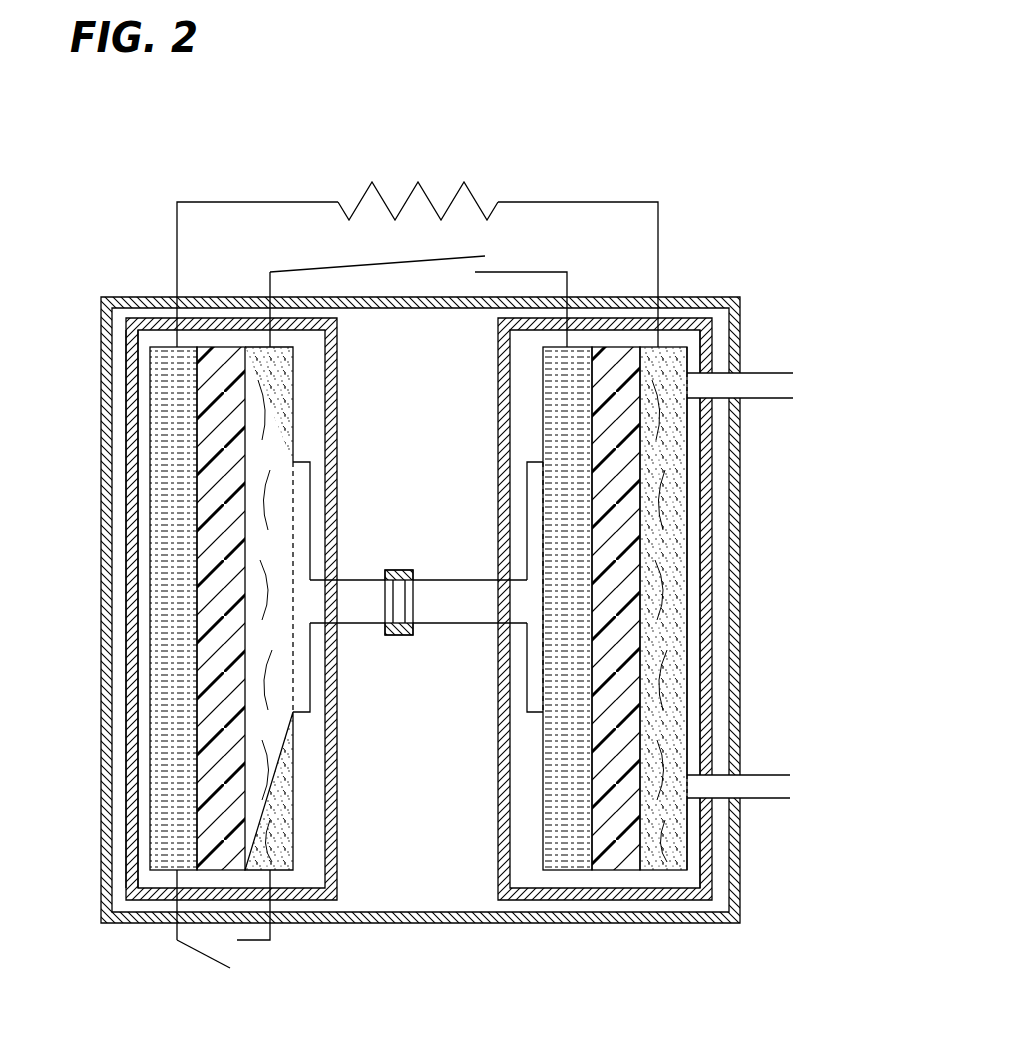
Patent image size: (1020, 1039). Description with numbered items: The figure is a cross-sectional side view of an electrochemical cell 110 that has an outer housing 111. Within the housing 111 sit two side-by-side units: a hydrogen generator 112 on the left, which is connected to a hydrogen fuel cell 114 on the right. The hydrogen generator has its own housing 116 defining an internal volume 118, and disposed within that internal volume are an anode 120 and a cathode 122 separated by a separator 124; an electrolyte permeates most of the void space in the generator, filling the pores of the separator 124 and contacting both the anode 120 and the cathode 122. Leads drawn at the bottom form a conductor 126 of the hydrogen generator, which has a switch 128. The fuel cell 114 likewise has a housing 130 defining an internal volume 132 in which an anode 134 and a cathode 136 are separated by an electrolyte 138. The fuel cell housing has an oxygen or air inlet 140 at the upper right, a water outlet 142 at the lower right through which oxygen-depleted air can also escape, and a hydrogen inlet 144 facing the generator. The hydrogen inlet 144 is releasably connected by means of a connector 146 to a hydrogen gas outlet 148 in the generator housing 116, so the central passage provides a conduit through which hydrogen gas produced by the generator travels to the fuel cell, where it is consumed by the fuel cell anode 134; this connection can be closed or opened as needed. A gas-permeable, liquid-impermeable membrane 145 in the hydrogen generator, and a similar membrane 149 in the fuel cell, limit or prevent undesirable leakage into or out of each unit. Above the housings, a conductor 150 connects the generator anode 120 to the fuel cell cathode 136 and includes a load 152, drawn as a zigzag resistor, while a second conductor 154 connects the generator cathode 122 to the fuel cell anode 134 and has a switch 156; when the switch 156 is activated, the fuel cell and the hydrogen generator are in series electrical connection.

The electrochemical cell 110 is at (178, 175).
The housing 111 is at (148, 297).
The hydrogen generator 112 is at (132, 318).
The hydrogen fuel cell 114 is at (700, 297).
The housing 116 is at (124, 432).
The internal volume 118 is at (136, 513).
The anode 120 is at (152, 648).
The cathode 122 is at (270, 777).
The separator 124 is at (208, 812).
The conductor 126 is at (210, 960).
The switch 128 is at (232, 948).
The housing 130 is at (703, 567).
The internal volume 132 is at (692, 627).
The anode 134 is at (560, 385).
The cathode 136 is at (655, 475).
The electrolyte 138 is at (623, 695).
The oxygen or air inlet 140 is at (766, 385).
The water outlet 142 is at (767, 787).
The hydrogen inlet 144 is at (462, 607).
The gas-permeable, liquid-impermeable membrane 145 is at (296, 473).
The connector 146 is at (398, 572).
The hydrogen gas outlet 148 is at (363, 608).
The gas-permeable, liquid-impermeable membrane 149 is at (540, 504).
The conductor 150 is at (222, 202).
The load 152 is at (418, 182).
The second conductor 154 is at (323, 271).
The switch 156 is at (472, 263).